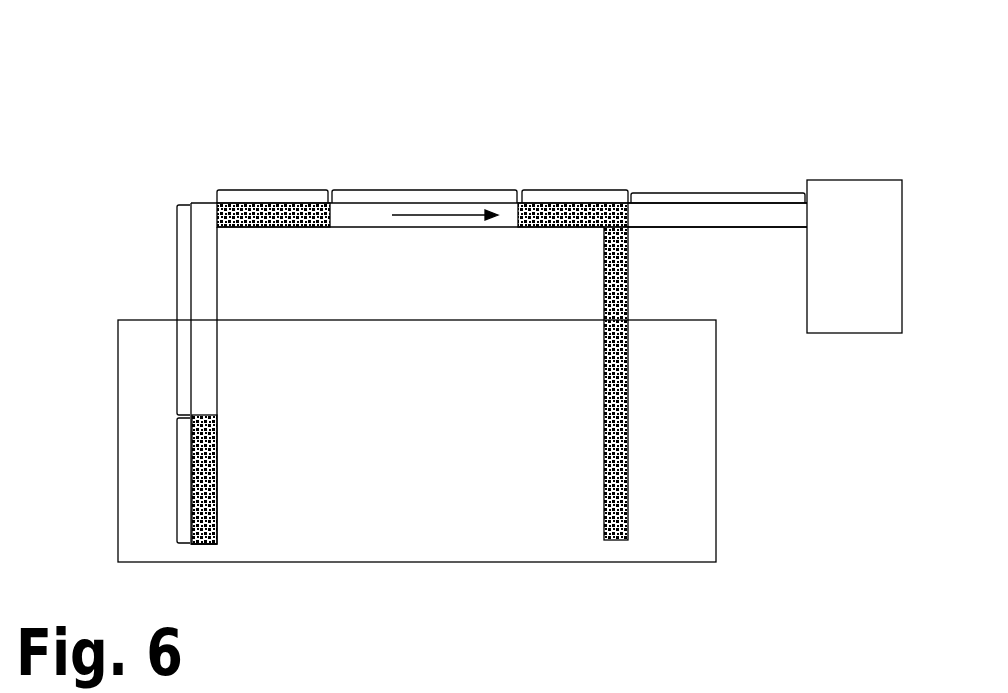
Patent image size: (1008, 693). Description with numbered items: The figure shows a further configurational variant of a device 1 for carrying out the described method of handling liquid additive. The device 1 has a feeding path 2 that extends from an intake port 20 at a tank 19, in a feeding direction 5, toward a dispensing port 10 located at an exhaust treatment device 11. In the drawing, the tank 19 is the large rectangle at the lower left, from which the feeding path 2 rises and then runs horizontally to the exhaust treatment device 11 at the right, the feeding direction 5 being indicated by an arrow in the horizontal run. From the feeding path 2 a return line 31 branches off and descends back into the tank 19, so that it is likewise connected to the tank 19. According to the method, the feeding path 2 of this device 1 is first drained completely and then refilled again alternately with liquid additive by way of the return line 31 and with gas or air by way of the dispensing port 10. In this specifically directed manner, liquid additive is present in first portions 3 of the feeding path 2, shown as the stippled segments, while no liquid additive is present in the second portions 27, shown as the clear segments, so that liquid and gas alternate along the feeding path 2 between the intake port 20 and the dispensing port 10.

The device 1 is at (158, 162).
The feeding path 2 is at (493, 203).
The first portions 3 is at (273, 190).
The feeding direction 5 is at (423, 215).
The dispensing port 10 is at (807, 227).
The exhaust treatment device 11 is at (820, 333).
The tank 19 is at (717, 486).
The intake port 20 is at (217, 544).
The second portions 27 is at (423, 190).
The return line 31 is at (604, 398).